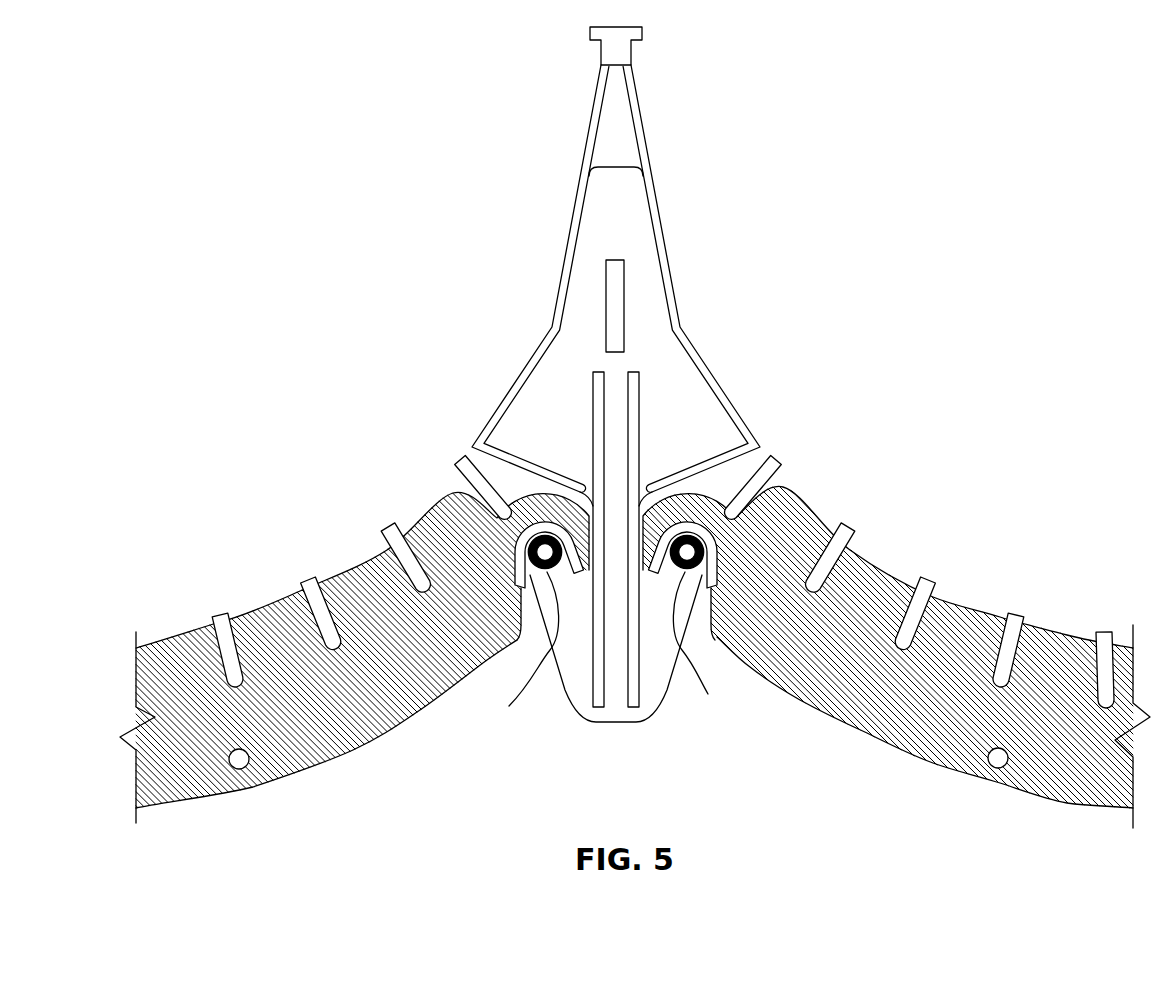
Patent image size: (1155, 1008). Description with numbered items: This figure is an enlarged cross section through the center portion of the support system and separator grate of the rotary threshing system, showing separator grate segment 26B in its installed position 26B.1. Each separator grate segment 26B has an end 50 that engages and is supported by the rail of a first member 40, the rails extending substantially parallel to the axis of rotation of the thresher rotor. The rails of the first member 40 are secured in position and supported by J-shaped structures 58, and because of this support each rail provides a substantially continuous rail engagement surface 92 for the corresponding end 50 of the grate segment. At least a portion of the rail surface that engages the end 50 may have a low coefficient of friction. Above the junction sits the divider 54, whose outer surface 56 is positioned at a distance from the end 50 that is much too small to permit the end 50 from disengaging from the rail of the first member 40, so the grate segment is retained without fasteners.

The divider 54 is at (685, 266).
The outer surface of divider 56 is at (566, 258).
The end of separator grate segment 50 is at (652, 648).
The J-shaped structure 58 is at (583, 695).
The first member 40 is at (607, 625).
The rail engagement surface 92 is at (712, 540).
The separator grate segment 26B is at (392, 733).
The installed position of separator grate segment 26B.1 is at (263, 782).